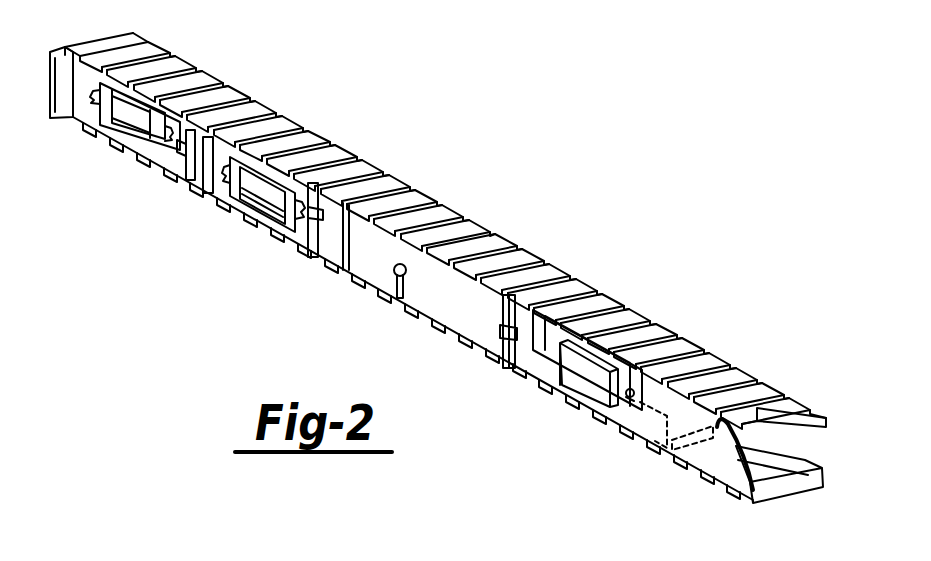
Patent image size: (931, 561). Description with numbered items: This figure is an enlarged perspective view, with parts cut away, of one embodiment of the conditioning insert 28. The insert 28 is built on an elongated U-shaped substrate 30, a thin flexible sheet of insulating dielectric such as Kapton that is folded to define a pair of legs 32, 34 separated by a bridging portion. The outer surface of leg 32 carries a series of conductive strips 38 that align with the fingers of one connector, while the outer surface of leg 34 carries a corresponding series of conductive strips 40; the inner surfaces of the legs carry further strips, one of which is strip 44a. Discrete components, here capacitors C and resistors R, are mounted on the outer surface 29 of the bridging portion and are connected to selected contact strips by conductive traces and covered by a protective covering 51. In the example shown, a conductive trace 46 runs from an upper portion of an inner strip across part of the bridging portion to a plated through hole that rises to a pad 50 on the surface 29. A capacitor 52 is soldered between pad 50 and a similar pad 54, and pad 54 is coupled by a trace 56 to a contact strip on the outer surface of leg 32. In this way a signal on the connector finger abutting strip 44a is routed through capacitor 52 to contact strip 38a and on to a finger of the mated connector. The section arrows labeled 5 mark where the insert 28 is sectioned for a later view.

The conditioning insert 28 is at (568, 187).
The outer surface of bridging portion 29 is at (380, 257).
The substrate 30 is at (783, 398).
The leg 32 is at (822, 428).
The leg 34 is at (822, 486).
The conductive strips 38 is at (350, 152).
The contact strip 38a is at (506, 262).
The conductive strips 40 is at (553, 385).
The strip 44a is at (700, 443).
The conductive trace 46 is at (640, 404).
The pad 50 is at (628, 390).
The protective covering 51 is at (70, 92).
The capacitor 52 is at (590, 380).
The pad 54 is at (540, 342).
The trace 56 is at (505, 368).
The capacitors C is at (262, 187).
The resistors R is at (407, 301).
The section line 5- 5 is at (537, 233).